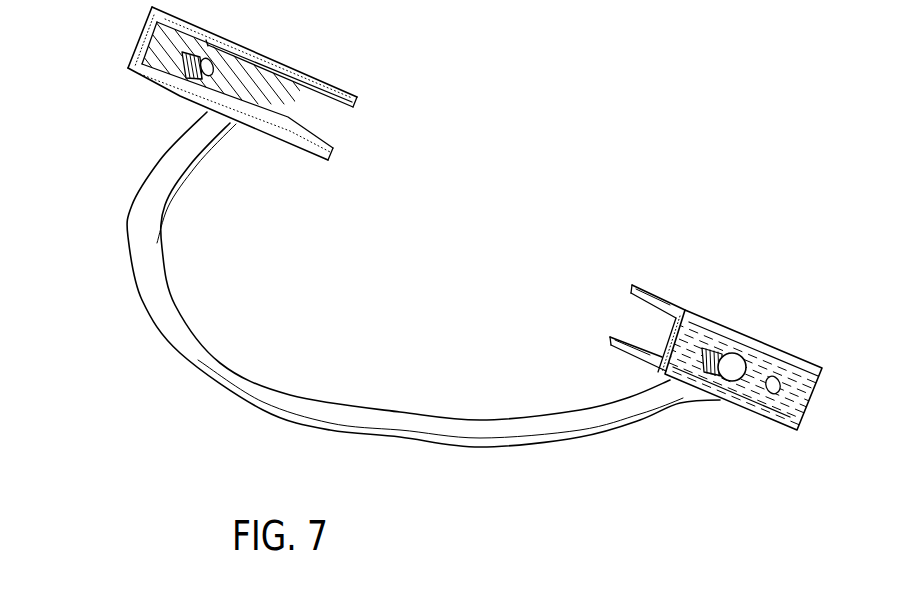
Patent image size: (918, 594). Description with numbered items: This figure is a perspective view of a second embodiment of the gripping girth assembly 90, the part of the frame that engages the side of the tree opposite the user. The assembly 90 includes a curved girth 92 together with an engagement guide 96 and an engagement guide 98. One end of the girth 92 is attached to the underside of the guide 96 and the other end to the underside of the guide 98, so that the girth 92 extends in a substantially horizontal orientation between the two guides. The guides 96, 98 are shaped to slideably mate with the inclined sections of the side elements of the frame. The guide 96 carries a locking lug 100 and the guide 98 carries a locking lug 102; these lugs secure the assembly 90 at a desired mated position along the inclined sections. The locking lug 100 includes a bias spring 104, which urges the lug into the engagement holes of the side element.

The gripping girth assembly 90 is at (445, 249).
The girth 92 is at (172, 270).
The engagement guide 96 is at (735, 361).
The engagement guide 98 is at (235, 80).
The locking lug 100 is at (730, 372).
The locking lug 102 is at (201, 71).
The bias spring 104 is at (762, 372).